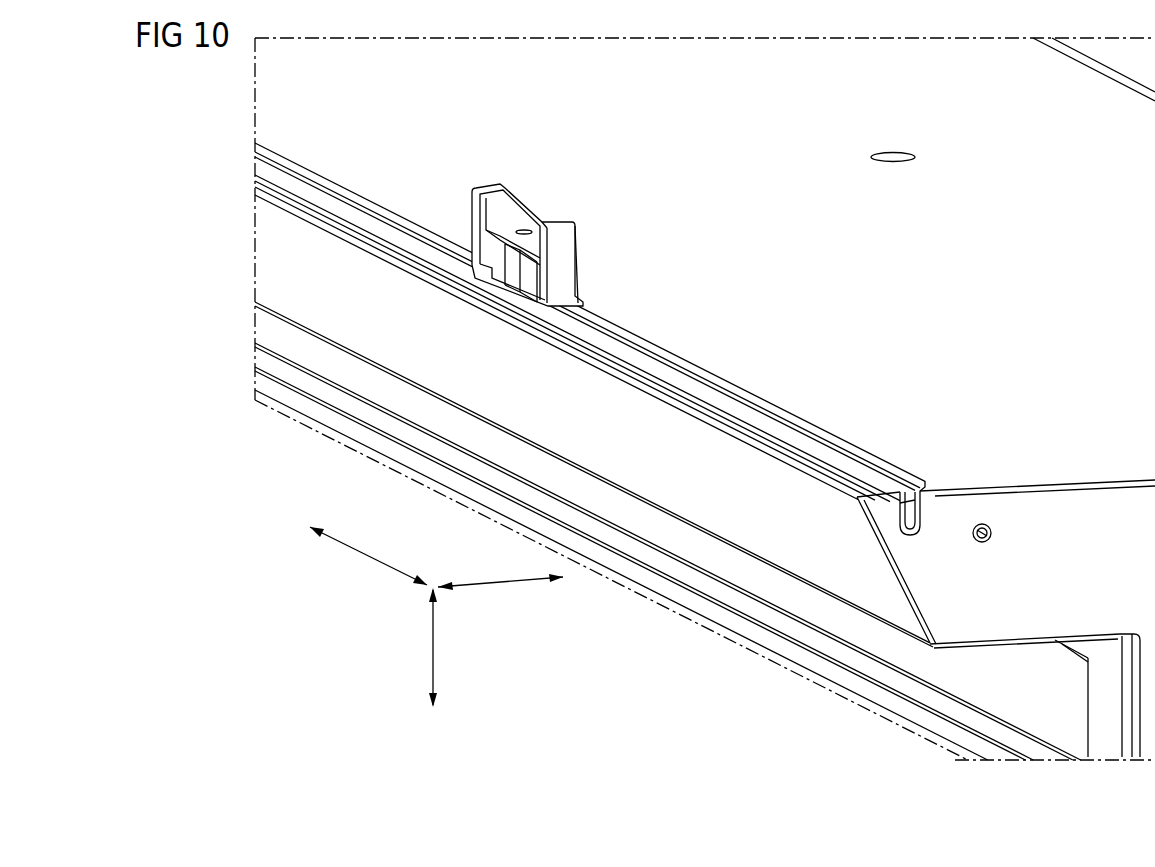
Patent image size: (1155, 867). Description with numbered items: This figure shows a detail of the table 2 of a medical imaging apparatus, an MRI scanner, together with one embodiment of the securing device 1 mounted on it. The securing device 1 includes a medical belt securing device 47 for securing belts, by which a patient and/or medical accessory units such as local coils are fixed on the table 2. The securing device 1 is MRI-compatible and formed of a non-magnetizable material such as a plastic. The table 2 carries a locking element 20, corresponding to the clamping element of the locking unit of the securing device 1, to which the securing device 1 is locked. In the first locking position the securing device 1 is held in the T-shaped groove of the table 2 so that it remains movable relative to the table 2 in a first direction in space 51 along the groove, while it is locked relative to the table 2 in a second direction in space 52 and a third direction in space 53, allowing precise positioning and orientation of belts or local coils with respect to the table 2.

The securing device 1 is at (564, 209).
The medical belt securing device 47 is at (603, 221).
The locking element 20 is at (921, 502).
The table 2 is at (660, 628).
The first direction in space 51 is at (350, 548).
The second direction in space 52 is at (507, 588).
The third direction in space 53 is at (432, 634).